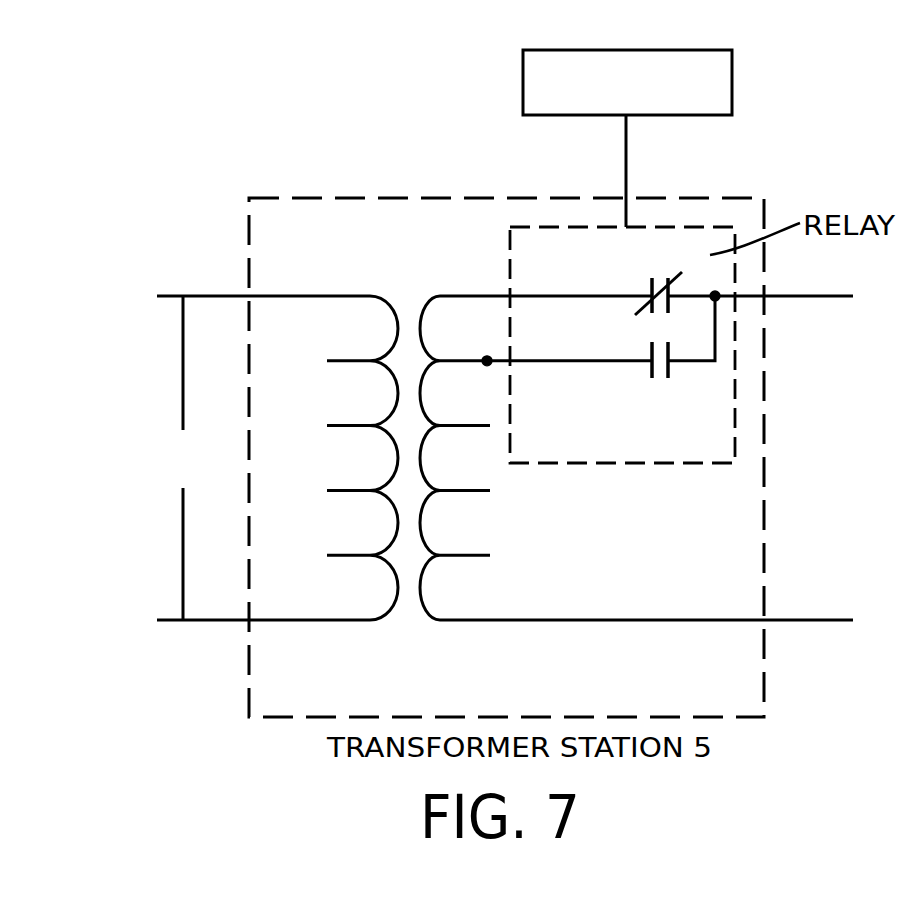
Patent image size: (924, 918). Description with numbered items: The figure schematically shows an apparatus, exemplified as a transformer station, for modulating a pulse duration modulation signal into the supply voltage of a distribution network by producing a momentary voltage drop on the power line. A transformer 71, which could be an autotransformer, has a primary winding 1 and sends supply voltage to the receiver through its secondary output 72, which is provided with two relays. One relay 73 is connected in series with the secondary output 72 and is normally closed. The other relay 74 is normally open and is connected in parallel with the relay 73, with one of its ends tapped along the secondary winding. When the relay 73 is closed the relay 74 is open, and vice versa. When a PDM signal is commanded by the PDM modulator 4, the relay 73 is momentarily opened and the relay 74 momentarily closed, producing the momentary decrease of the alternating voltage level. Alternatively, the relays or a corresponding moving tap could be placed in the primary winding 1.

The PDM modulator 4 is at (523, 80).
The primary winding 1 is at (184, 458).
The transformer 71 is at (395, 643).
The secondary output 72 is at (818, 296).
The relay 73 is at (651, 288).
The relay 74 is at (651, 352).